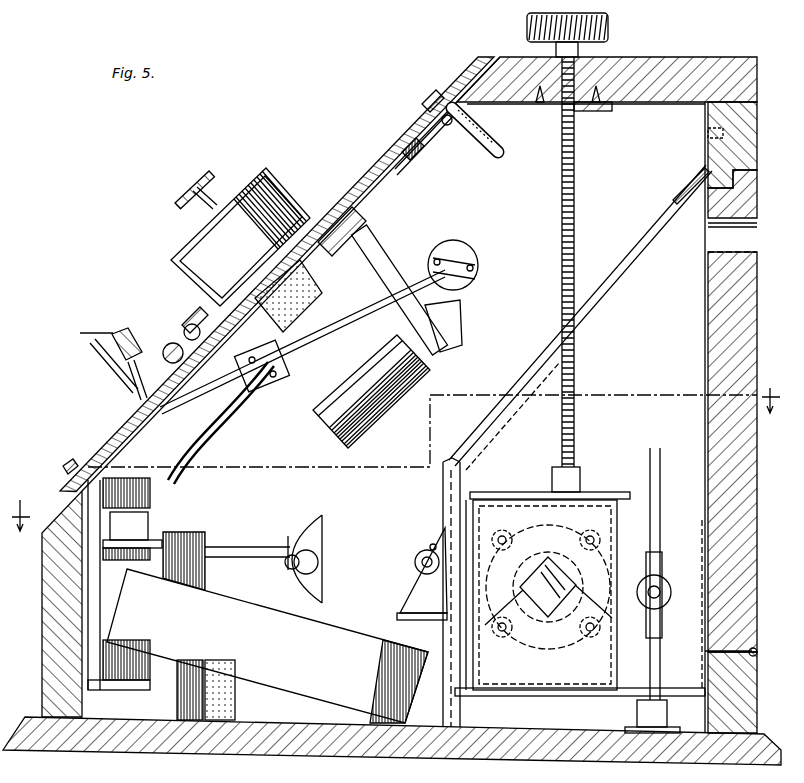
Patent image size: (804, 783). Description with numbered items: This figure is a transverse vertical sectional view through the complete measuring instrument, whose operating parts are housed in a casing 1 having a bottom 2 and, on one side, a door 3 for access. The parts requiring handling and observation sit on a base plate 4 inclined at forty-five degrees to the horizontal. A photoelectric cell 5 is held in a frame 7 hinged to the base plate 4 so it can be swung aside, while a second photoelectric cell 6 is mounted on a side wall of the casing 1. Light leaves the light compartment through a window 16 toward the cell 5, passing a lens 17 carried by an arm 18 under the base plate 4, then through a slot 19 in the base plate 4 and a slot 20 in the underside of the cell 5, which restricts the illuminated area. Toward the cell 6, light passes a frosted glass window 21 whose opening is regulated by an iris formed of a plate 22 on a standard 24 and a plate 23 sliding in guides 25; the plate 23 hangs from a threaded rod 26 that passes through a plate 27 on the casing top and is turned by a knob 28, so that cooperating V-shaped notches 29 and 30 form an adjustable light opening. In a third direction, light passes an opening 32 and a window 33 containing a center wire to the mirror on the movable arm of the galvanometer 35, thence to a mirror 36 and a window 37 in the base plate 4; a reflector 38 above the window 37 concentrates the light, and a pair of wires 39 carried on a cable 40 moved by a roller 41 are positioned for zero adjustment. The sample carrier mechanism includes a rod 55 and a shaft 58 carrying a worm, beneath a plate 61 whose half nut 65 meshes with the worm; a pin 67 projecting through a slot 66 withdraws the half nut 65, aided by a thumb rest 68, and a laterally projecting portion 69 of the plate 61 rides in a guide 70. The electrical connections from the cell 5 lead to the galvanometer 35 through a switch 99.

The casing 1 is at (652, 66).
The bottom 2 is at (312, 745).
The door 3 is at (745, 300).
The base plate 4 is at (372, 176).
The photoelectric cell 5 is at (278, 188).
The photoelectric cell 6 is at (396, 459).
The frame 7 is at (248, 187).
The window 16 is at (490, 466).
The lens 17 is at (392, 410).
The arm 18 is at (366, 262).
The slot 19 is at (305, 268).
The slot 20 is at (290, 202).
The frosted glass window 21 is at (563, 577).
The plate 22 is at (552, 676).
The plate 23 is at (582, 492).
The standard 24 is at (655, 668).
The guides 25 is at (662, 536).
The rod 26 is at (578, 388).
The plate 27 is at (590, 111).
The knob 28 is at (588, 26).
The V-shaped notch 29 is at (514, 632).
The V-shaped notch 30 is at (545, 556).
The opening 32 is at (432, 544).
The window 33 is at (322, 562).
The galvanometer 35 is at (185, 600).
The mirror 36 is at (412, 555).
The window 37 is at (430, 120).
The reflector 38 is at (498, 136).
The wires 39 is at (416, 150).
The cable 40 is at (448, 126).
The roller 41 is at (430, 92).
The rod 55 is at (188, 320).
The shaft 58 is at (136, 338).
The plate 61 is at (168, 342).
The half nut 65 is at (165, 402).
The slot 66 is at (206, 423).
The pin 67 is at (84, 333).
The thumb rest 68 is at (92, 366).
The laterally projecting portion 69 is at (105, 427).
The guide 70 is at (60, 468).
The switch 99 is at (458, 262).